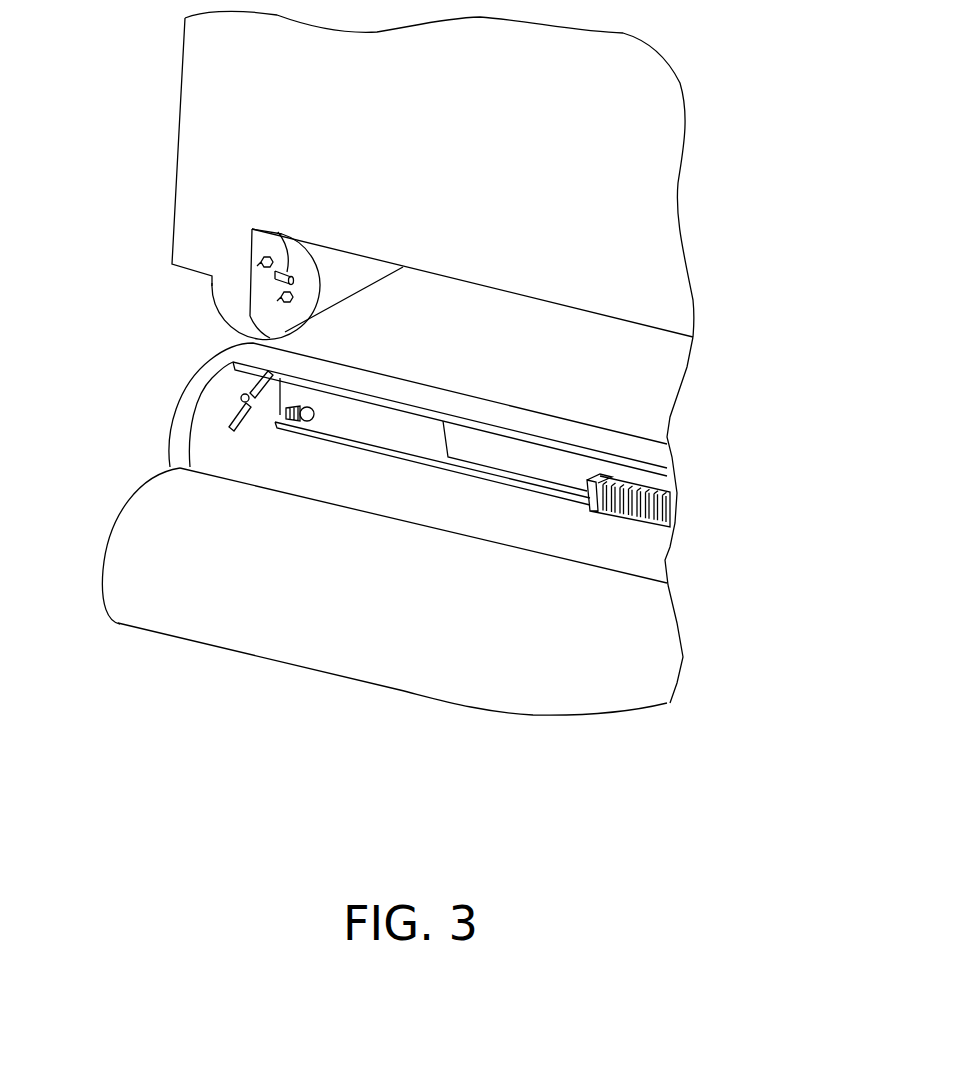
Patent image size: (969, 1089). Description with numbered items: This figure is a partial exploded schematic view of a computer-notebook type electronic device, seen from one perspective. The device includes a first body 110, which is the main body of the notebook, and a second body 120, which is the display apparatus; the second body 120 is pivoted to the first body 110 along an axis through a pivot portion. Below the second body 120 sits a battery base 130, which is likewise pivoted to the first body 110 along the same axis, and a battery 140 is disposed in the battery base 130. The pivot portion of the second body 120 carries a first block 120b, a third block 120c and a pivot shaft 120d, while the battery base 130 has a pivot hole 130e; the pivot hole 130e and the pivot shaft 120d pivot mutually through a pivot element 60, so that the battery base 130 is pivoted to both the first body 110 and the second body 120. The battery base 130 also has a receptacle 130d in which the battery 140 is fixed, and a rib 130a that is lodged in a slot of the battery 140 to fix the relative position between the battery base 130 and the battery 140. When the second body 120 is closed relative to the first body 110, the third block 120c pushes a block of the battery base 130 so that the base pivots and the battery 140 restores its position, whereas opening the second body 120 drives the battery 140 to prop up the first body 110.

The pivot element 60 is at (308, 422).
The first body 110 is at (443, 290).
The second body 120 is at (250, 152).
The first block 120b is at (265, 262).
The third block 120c is at (283, 297).
The pivot shaft 120d is at (280, 232).
The battery base 130 is at (178, 453).
The rib 130a is at (250, 410).
The receptacle 130d is at (378, 422).
The pivot hole 130e is at (240, 398).
The battery 140 is at (135, 603).